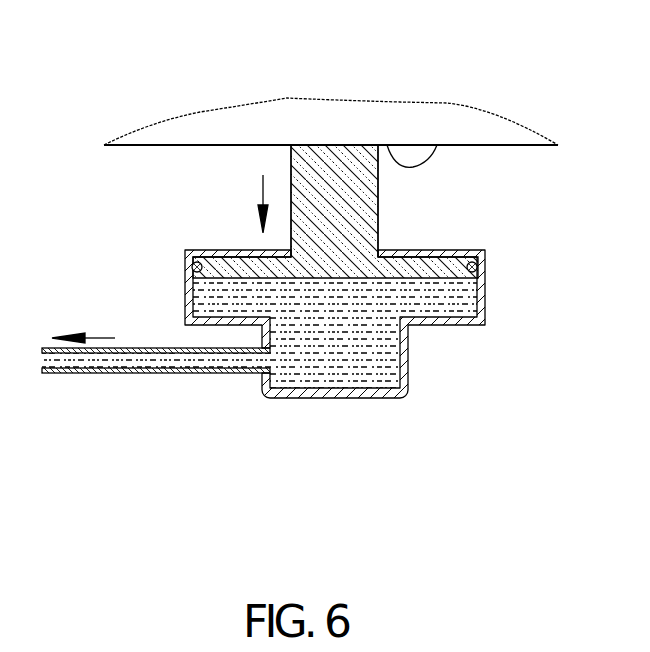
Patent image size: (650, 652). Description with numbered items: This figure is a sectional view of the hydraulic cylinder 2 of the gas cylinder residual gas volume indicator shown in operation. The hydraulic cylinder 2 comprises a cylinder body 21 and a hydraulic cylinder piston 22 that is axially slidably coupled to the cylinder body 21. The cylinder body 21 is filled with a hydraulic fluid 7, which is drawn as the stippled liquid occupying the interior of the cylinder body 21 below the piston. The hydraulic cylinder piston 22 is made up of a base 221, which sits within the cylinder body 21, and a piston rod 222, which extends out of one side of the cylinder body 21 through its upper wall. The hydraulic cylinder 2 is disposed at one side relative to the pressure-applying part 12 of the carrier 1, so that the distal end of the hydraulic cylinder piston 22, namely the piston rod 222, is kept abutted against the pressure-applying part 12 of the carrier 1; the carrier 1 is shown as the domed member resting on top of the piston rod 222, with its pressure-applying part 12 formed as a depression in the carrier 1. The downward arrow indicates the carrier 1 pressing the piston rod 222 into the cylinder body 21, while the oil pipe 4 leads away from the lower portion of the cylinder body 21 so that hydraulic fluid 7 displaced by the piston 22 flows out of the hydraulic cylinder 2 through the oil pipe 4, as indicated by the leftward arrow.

The carrier 1 is at (254, 125).
The pressure-applying part 12 is at (437, 145).
The hydraulic cylinder 2 is at (315, 254).
The cylinder body 21 is at (462, 322).
The hydraulic cylinder piston 22 is at (390, 148).
The base 221 is at (476, 252).
The piston rod 222 is at (333, 165).
The oil pipe 4 is at (162, 373).
The hydraulic fluid 7 is at (330, 363).